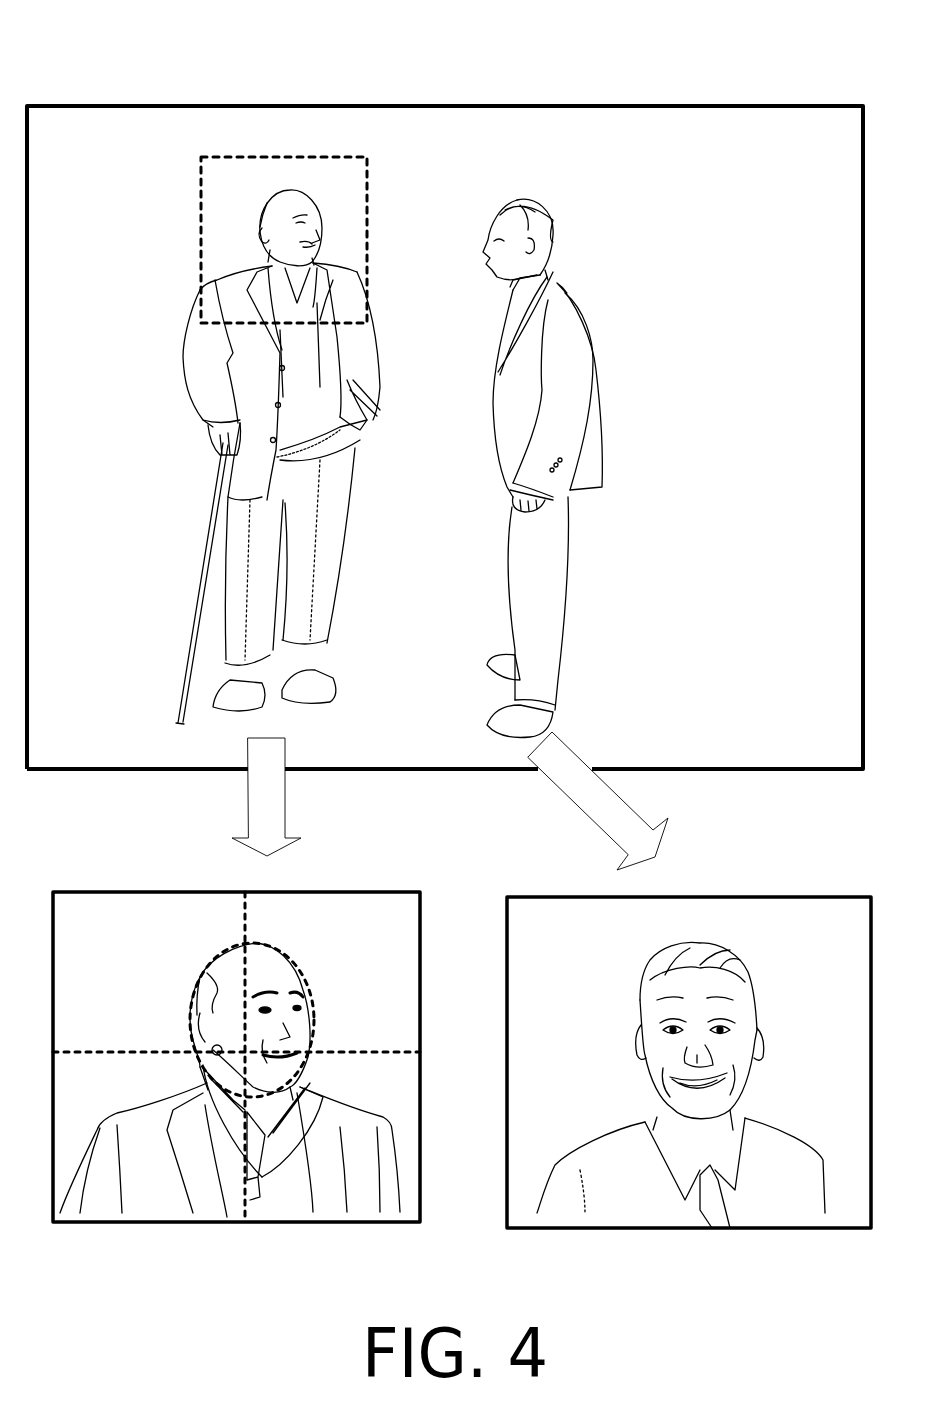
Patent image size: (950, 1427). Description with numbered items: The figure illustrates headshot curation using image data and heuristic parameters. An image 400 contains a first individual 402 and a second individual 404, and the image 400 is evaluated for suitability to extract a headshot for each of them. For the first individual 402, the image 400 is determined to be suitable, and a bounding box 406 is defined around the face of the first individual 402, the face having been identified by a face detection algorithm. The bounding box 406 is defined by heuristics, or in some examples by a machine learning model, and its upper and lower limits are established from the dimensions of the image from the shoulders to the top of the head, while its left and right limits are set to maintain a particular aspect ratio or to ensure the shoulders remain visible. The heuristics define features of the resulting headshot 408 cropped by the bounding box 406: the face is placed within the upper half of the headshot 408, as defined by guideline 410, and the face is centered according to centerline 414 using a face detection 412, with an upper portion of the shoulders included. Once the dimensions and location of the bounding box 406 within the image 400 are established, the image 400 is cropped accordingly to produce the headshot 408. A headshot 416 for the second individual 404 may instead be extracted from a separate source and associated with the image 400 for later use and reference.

The image 400 is at (58, 68).
The first individual 402 is at (192, 357).
The second individual 404 is at (590, 408).
The bounding box 406 is at (200, 228).
The headshot 408 is at (130, 892).
The guideline 410 is at (132, 1052).
The face detection 412 is at (305, 980).
The centerline 414 is at (248, 930).
The headshot 416 is at (537, 897).